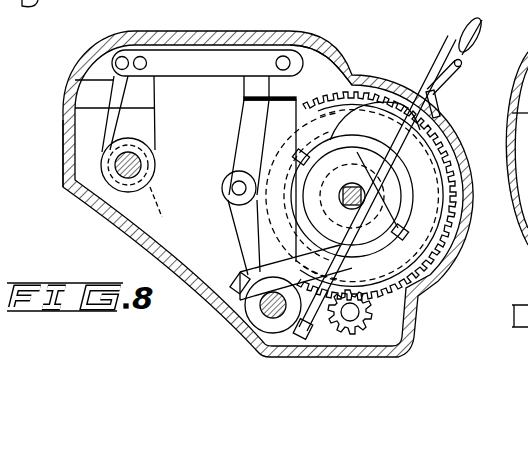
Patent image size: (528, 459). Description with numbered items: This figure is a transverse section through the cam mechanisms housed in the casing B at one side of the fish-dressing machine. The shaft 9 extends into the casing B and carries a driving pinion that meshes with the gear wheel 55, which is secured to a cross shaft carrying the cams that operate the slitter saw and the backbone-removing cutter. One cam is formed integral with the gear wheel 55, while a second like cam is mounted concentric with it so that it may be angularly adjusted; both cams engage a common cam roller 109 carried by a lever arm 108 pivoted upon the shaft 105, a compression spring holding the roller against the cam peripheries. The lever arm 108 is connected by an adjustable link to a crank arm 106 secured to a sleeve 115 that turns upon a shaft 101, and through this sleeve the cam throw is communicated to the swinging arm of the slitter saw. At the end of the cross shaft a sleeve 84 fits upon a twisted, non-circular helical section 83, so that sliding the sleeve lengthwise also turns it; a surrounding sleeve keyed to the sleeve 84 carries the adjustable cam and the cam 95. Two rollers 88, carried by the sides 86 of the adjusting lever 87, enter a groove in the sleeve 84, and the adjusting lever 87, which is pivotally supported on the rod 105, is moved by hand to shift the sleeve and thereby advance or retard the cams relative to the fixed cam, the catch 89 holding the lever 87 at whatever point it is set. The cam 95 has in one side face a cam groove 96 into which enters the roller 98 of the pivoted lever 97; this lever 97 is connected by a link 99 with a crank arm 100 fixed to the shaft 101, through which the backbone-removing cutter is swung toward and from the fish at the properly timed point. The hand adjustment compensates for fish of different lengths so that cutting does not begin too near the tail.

The crank arm 106 is at (78, 77).
The casing B is at (66, 180).
The gear wheel 55 is at (326, 70).
The link 99 is at (226, 70).
The crank arm 100 is at (128, 114).
The shaft 101 is at (123, 176).
The pivoted lever 97 is at (273, 122).
The lever arm 108 is at (237, 156).
The cam roller 109 is at (229, 190).
The sleeve 115 is at (200, 240).
The roller 98 is at (286, 220).
The shaft 105 is at (266, 308).
The rollers 88 is at (356, 250).
The cam groove 96 is at (428, 218).
The helical section 83 is at (352, 196).
The sleeve 84 is at (388, 143).
The cam 95 is at (440, 233).
The adjusting lever 87 is at (449, 40).
The catch 89 is at (440, 88).
The sides of adjusting lever 86 is at (356, 323).
The shaft 9 is at (370, 313).